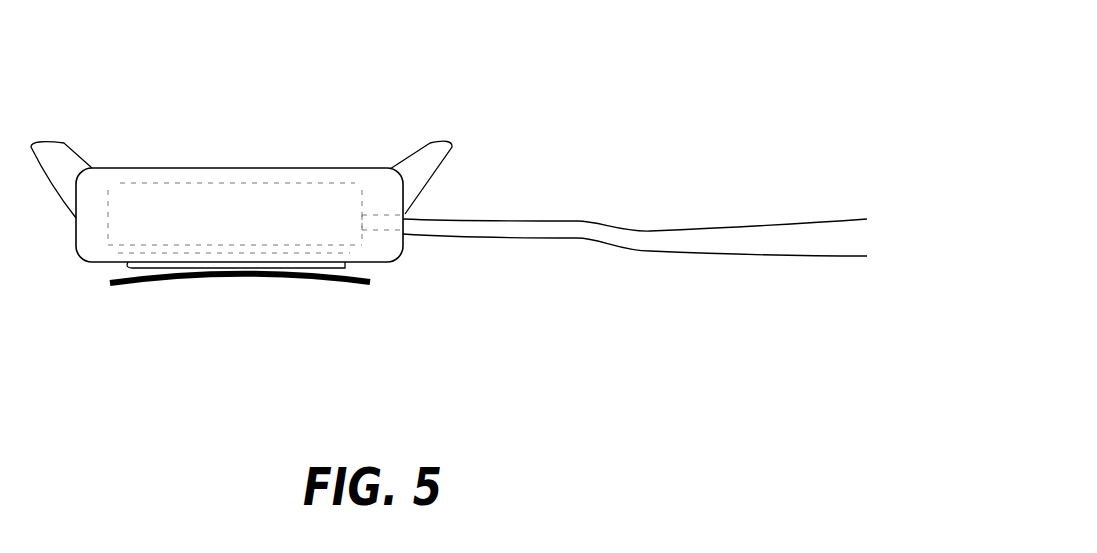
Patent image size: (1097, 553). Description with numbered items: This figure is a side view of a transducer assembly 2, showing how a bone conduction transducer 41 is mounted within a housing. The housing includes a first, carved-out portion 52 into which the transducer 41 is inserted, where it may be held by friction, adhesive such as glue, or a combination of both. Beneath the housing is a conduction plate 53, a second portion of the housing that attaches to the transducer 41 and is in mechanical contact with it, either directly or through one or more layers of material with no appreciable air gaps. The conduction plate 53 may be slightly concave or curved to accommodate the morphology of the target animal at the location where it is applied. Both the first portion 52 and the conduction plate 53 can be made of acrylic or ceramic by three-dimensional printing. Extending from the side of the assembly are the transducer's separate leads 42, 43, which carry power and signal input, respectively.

The transducer assembly 2 is at (443, 69).
The bone conduction transducer 41 is at (203, 183).
The lead 42 is at (648, 230).
The lead 43 is at (653, 253).
The first, carved-out portion 52 is at (298, 170).
The conduction plate 53 is at (332, 282).